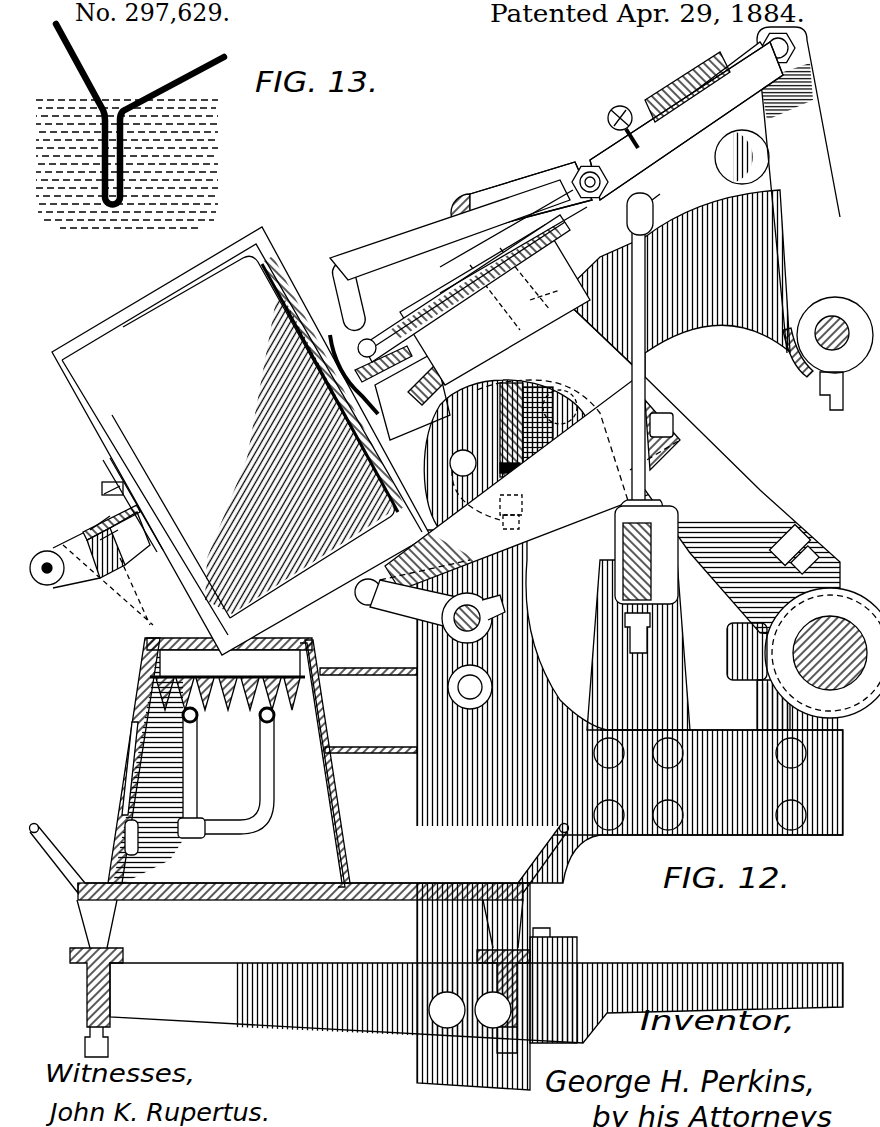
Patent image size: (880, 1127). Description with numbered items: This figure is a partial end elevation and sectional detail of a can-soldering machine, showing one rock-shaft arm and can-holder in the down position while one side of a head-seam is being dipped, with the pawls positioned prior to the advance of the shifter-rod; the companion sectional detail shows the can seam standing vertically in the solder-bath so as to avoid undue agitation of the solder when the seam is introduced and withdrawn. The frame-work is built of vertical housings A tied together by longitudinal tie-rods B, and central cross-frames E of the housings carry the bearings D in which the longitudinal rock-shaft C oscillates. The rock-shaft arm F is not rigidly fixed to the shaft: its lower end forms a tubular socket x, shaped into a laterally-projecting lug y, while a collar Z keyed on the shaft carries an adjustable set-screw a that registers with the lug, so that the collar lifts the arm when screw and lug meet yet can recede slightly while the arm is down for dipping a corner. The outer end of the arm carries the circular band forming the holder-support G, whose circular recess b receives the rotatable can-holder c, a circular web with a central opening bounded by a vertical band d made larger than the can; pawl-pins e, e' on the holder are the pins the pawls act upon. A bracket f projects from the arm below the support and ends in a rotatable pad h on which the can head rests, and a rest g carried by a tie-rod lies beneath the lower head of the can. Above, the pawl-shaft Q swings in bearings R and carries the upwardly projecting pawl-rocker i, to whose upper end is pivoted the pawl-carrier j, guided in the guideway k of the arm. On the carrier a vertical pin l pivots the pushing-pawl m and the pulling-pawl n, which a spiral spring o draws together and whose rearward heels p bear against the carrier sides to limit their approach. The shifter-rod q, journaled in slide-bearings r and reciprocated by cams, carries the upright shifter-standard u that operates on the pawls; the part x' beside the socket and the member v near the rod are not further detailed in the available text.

The vertical housing A is at (476, 653).
The longitudinal tie-rods B is at (125, 953).
The longitudinal rock-shaft C is at (822, 653).
The bearings D is at (747, 651).
The central cross-frames E is at (686, 782).
The rock-shaft arm F is at (700, 468).
The can-holder support G is at (240, 441).
The pawl-shaft Q is at (832, 333).
The bearings R is at (792, 343).
The collar Z is at (557, 466).
The adjustable set-screw a is at (800, 535).
The circular recess b is at (80, 540).
The can-holder c is at (92, 527).
The vertical band d is at (142, 530).
The stop e is at (341, 340).
The stop plate e' is at (99, 487).
The bracket f is at (522, 485).
The rest g is at (437, 601).
The rotatable pad h is at (355, 600).
The pawl-rocker i is at (802, 170).
The pawl-carrier j is at (606, 167).
The guideway k is at (472, 200).
The pin l is at (660, 88).
The pushing-pawl m is at (372, 343).
The pulling-pawl n is at (440, 300).
The spiral spring o is at (623, 118).
The heels p is at (730, 95).
The shifter-rod q is at (646, 579).
The slide-bearings r is at (617, 565).
The shifter-standard u is at (650, 430).
The pin v is at (622, 585).
The tubular socket x is at (641, 353).
The rod head x' is at (659, 190).
The laterally-projecting lug y is at (450, 230).